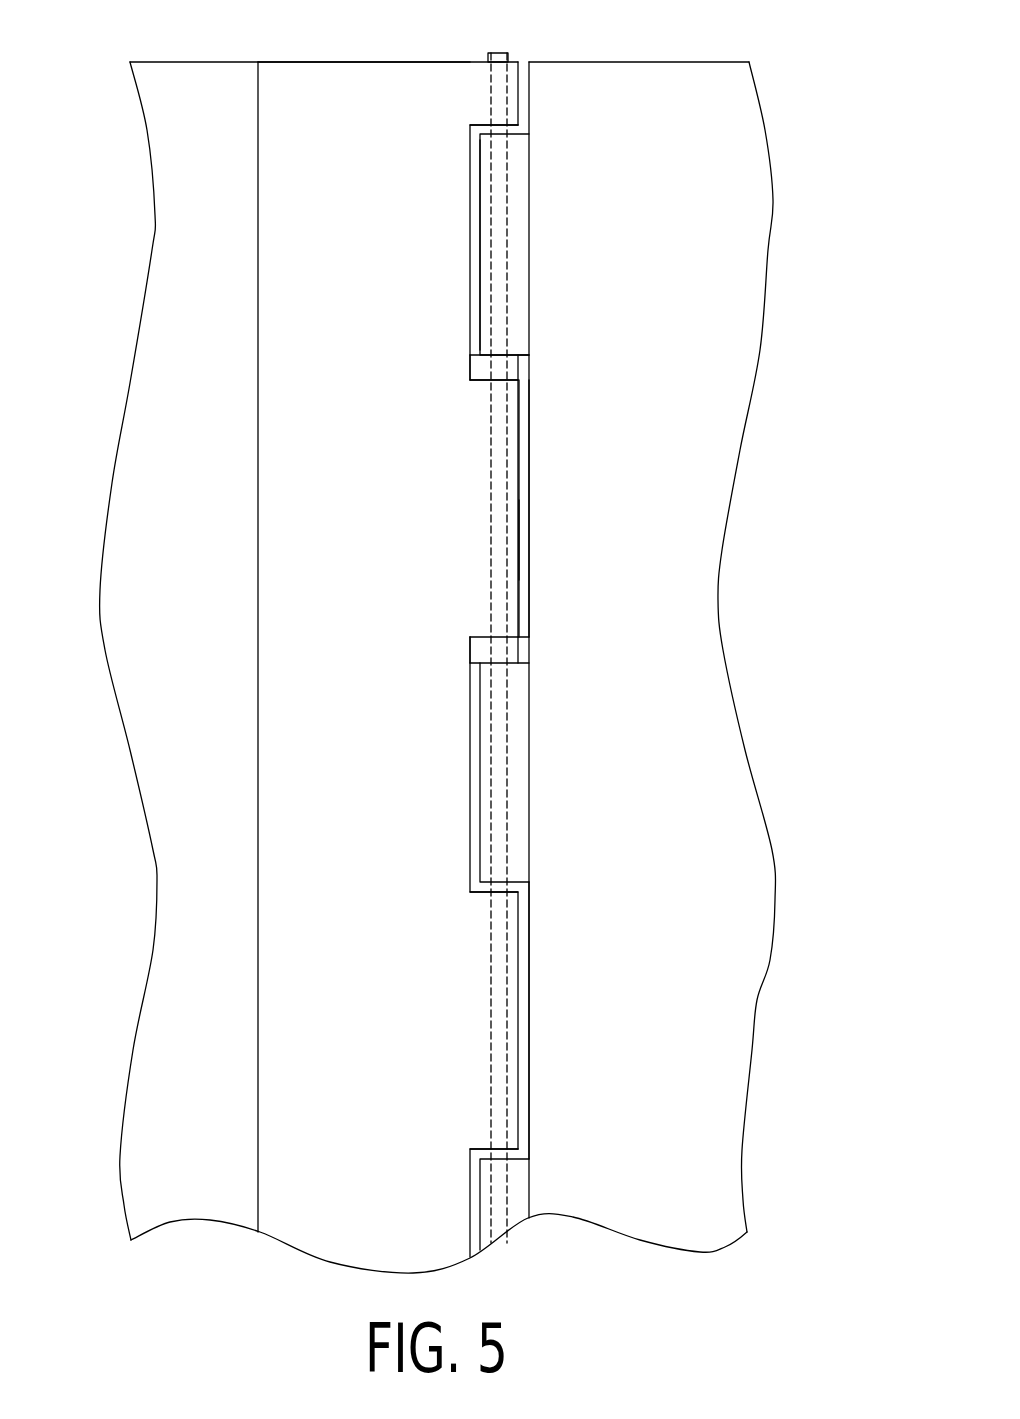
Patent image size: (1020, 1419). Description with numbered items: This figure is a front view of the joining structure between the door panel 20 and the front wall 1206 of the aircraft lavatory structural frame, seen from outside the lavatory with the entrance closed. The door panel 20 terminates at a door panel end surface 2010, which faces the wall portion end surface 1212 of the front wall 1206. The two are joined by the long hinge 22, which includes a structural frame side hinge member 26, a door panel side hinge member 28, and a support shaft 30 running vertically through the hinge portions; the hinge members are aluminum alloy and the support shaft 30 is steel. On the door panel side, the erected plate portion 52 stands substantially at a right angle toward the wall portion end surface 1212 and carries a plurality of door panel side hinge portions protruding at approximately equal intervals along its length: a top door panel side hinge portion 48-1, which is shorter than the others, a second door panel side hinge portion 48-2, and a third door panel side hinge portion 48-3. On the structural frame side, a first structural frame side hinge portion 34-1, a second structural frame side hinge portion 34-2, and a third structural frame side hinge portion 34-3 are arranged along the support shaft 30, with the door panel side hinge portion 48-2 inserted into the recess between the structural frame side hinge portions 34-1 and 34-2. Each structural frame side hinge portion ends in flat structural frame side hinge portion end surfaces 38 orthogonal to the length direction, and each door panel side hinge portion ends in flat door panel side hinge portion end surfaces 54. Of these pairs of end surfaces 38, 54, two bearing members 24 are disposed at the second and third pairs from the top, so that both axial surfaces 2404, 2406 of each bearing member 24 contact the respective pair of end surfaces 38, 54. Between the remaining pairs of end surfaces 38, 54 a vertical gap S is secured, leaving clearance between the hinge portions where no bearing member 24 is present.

The door panel 20 is at (198, 115).
The door panel end surface 2010 is at (258, 152).
The erected plate portion 52 is at (363, 98).
The support shaft 30 is at (491, 88).
The long hinge 22 is at (523, 50).
The front wall 1206 is at (668, 87).
The top door panel side hinge portion 48-1 is at (529, 98).
The door panel side hinge portion second from the top 48-2 is at (529, 470).
The door panel side hinge portion third from the top 48-3 is at (529, 975).
The structural frame side hinge portion first from the top 34-1 is at (478, 272).
The structural frame side hinge portion second from the top 34-2 is at (478, 723).
The structural frame side hinge portion third from the top 34-3 is at (480, 1205).
The structural frame side hinge member 26 is at (476, 200).
The gap S is at (484, 126).
The bearing member 24 is at (577, 425).
The surface of the bearing member 2404 is at (500, 355).
The surface of the bearing member 2406 is at (498, 382).
The door panel side hinge portion end surface 54 is at (474, 372).
The structural frame side hinge portion end surface 38 is at (520, 372).
The wall portion end surface 1212 is at (519, 445).
The door panel side hinge member 28 is at (521, 538).